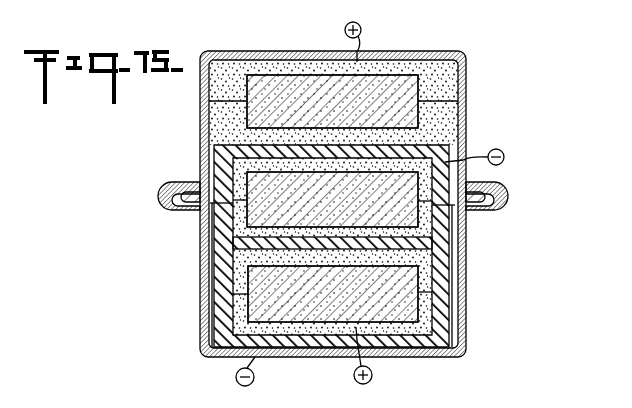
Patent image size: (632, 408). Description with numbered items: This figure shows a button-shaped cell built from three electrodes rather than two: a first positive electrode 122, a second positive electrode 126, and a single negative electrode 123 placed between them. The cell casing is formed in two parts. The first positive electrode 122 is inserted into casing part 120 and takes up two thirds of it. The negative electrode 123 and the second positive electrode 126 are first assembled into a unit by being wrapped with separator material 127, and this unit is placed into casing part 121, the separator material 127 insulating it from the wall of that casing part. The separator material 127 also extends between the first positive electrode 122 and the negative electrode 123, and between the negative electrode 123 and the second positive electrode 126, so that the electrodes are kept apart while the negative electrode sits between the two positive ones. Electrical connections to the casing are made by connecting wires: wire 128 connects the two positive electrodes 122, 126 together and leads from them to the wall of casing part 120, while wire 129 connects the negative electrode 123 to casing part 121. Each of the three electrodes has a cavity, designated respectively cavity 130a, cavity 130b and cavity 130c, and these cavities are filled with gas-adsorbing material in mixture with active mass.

The casing part 120 is at (464, 127).
The casing part 121 is at (202, 267).
The positive electrode 122 is at (441, 80).
The negative electrode 123 is at (424, 229).
The positive electrode 126 is at (416, 327).
The separator material 127 is at (218, 149).
The connecting wire 128 is at (462, 264).
The connecting wire 129 is at (217, 311).
The cavity 130a is at (353, 111).
The cavity 130b is at (332, 199).
The cavity 130c is at (349, 303).